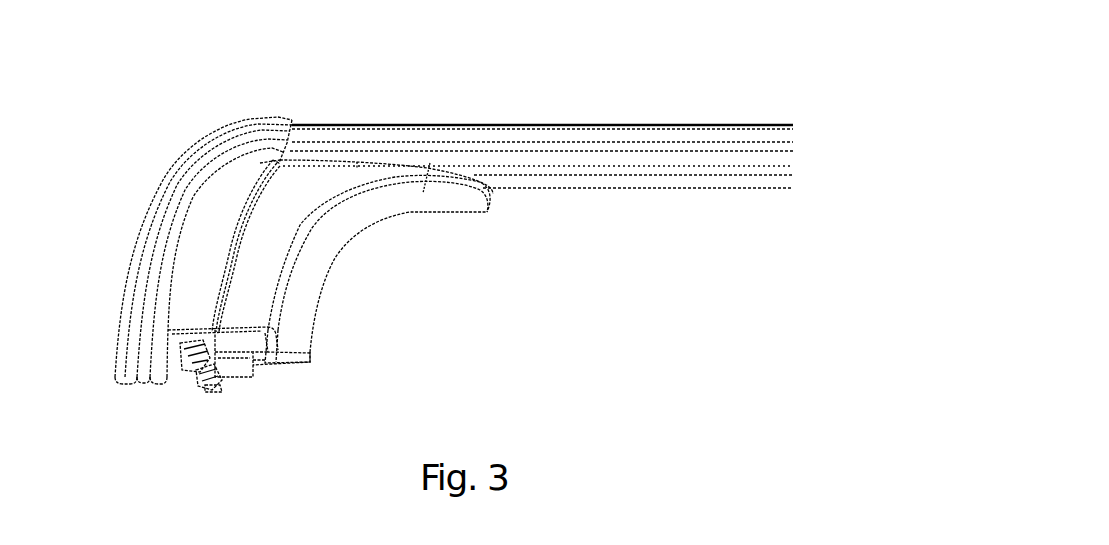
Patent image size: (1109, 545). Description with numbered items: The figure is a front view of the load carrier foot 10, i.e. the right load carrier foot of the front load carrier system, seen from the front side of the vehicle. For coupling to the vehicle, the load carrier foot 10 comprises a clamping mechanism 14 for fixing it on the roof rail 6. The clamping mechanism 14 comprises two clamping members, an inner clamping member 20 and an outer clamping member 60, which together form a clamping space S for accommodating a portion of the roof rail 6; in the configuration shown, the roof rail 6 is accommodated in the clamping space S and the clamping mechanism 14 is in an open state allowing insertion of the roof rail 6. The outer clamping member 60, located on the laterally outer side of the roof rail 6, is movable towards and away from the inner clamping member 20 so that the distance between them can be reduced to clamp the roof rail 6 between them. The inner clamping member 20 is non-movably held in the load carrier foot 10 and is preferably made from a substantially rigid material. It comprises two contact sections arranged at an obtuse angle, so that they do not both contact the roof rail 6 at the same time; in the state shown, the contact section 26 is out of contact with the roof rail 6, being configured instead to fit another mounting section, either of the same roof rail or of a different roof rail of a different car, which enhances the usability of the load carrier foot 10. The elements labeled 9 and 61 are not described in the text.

The roof rail 9 is at (620, 160).
The load carrier foot 10 is at (144, 142).
The contact section 26 is at (263, 350).
The inner clamping member 20 is at (258, 358).
The roof rail 6 is at (237, 372).
The outer clamping member 60 is at (195, 377).
The engagement element 61 is at (214, 388).
The clamping mechanism 14 is at (212, 418).
The clamping space S is at (253, 384).